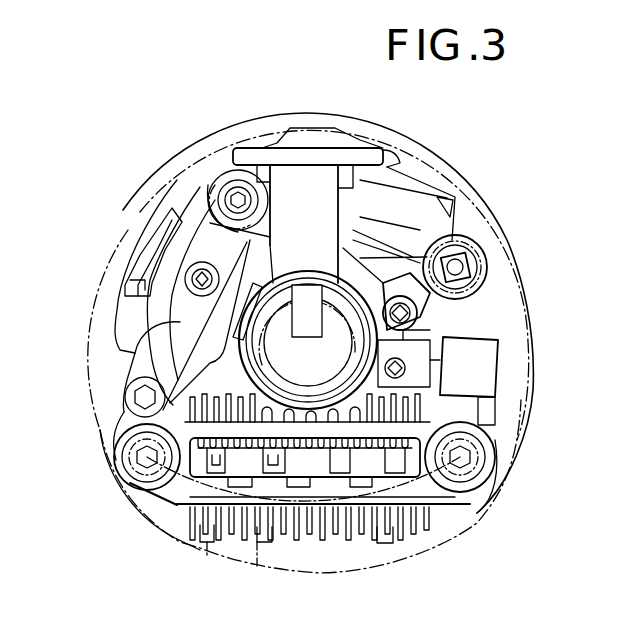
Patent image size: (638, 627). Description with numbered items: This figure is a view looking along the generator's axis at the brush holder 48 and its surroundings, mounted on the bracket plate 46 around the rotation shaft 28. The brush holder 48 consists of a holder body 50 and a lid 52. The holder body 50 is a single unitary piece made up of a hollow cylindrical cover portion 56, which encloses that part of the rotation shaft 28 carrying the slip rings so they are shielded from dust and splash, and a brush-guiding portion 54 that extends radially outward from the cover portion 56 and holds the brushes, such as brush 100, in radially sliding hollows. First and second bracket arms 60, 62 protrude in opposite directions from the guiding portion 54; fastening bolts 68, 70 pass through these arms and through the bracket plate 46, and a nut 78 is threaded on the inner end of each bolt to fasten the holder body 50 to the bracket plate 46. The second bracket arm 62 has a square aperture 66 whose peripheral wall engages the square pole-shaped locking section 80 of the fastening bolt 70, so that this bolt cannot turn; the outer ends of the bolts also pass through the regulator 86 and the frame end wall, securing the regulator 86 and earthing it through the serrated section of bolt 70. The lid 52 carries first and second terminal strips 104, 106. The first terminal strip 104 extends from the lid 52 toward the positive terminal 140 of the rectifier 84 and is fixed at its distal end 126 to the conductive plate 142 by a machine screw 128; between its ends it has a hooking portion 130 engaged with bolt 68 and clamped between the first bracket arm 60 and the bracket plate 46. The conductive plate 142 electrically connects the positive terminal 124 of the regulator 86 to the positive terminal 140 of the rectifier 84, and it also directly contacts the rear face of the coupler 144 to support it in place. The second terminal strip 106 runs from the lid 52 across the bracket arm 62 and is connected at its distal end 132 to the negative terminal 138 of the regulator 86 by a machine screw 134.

The rotation shaft 28 is at (355, 385).
The bracket plate 46 is at (470, 523).
The brush holder 48 is at (331, 127).
The holder body 50 is at (302, 190).
The lid 52 is at (340, 153).
The brush-guiding portion 54 is at (308, 235).
The cylindrical cover portion 56 is at (247, 365).
The first bracket arm 60 is at (266, 240).
The second bracket arm 62 is at (387, 243).
The square aperture 66 is at (460, 277).
The fastening bolt 68 is at (233, 197).
The fastening bolt 70 is at (467, 270).
The nut 78 is at (240, 188).
The locking section 80 is at (470, 250).
The rectifier 84 is at (238, 538).
The regulator 86 is at (460, 207).
The brush 100 is at (297, 330).
The first terminal strip 104 is at (210, 195).
The second terminal strip 106 is at (387, 183).
The positive terminal of the regulator 124 is at (160, 230).
The distal end 126 is at (167, 283).
The machine screw 128 is at (185, 278).
The hooking portion 130 is at (237, 187).
The distal end 132 is at (356, 288).
The machine screw 134 is at (445, 353).
The negative terminal of the regulator 138 is at (432, 312).
The positive terminal of the rectifier 140 is at (114, 453).
The conductive plate 142 is at (147, 325).
The coupler 144 is at (122, 311).